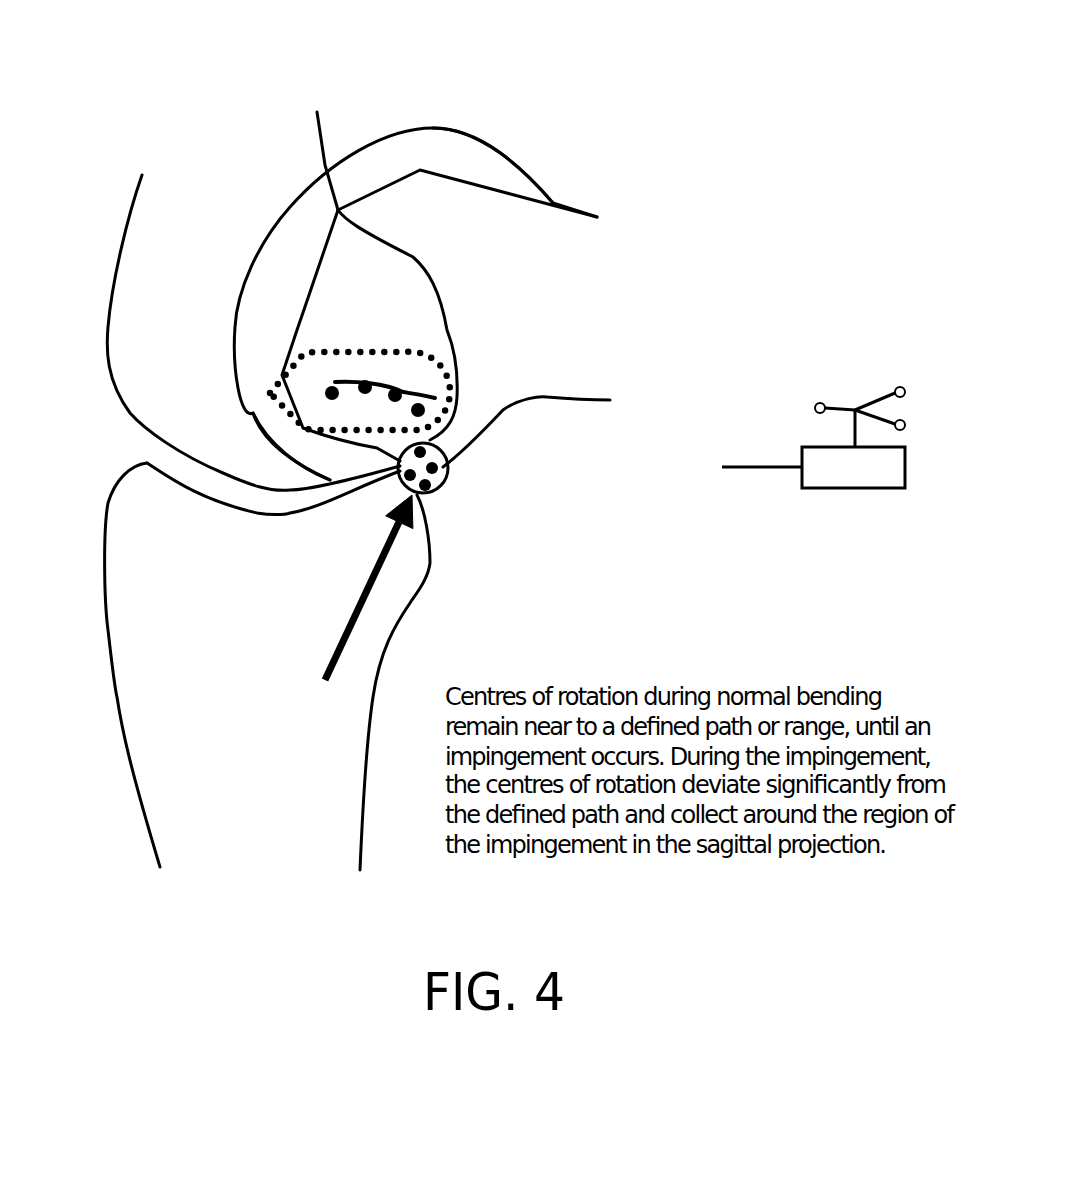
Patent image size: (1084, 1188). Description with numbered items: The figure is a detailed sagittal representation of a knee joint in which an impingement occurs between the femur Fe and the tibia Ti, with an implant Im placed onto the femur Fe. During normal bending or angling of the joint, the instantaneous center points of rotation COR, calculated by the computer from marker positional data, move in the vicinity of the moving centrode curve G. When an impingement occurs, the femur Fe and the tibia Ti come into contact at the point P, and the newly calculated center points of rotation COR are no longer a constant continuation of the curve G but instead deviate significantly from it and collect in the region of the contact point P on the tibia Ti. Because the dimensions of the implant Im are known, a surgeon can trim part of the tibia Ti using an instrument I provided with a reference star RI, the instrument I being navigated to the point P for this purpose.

The femur Fe is at (570, 240).
The implant Im is at (477, 130).
The tibia Ti is at (143, 697).
The moving centrode curve G is at (387, 383).
The instantaneous center points of rotation COR is at (427, 410).
The contact point P is at (360, 606).
The reference star RI is at (853, 418).
The instrument I is at (777, 468).